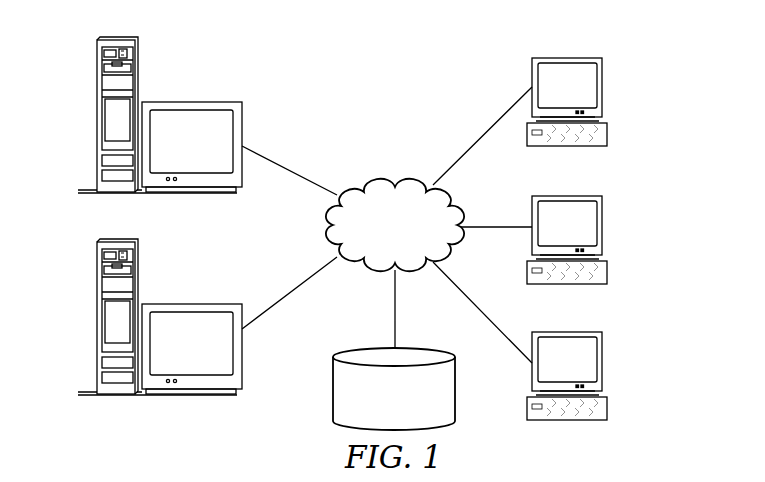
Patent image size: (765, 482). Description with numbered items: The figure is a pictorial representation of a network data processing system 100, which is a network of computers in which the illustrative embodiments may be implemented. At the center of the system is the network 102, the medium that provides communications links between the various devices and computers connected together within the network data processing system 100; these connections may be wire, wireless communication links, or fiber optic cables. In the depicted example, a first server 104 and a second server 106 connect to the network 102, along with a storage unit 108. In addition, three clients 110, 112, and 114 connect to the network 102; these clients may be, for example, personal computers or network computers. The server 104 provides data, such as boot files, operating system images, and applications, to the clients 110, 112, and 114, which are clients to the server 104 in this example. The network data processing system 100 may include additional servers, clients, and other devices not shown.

The network data processing system 100 is at (447, 74).
The network 102 is at (368, 180).
The server 104 is at (97, 115).
The server 106 is at (97, 318).
The storage unit 108 is at (333, 400).
The client 110 is at (602, 88).
The client 112 is at (602, 227).
The client 114 is at (602, 363).